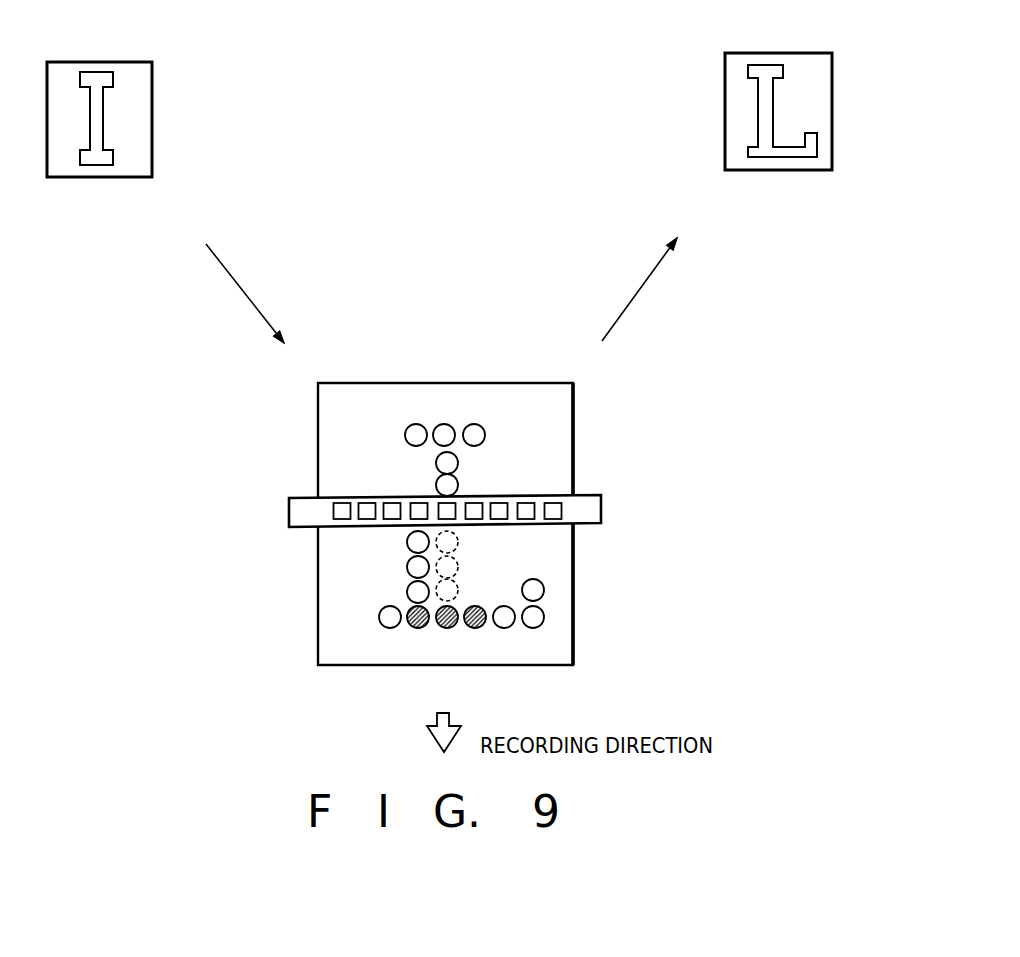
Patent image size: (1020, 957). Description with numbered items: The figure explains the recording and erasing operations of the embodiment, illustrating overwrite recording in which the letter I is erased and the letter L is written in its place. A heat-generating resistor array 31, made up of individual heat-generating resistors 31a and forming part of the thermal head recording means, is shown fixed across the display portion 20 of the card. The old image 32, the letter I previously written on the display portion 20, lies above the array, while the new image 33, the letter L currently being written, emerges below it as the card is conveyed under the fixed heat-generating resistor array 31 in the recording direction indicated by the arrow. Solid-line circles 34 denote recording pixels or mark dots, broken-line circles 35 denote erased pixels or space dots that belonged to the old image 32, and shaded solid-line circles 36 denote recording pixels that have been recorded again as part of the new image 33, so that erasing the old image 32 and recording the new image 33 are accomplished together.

The display portion 20 is at (558, 465).
The heat-generating resistor array 31 is at (288, 513).
The heat-generating resistor 31a is at (563, 510).
The old image 32 is at (152, 122).
The new image 33 is at (725, 105).
The recording pixels 34 is at (416, 424).
The erased pixels 35 is at (458, 570).
The re-recorded recording pixels 36 is at (452, 623).